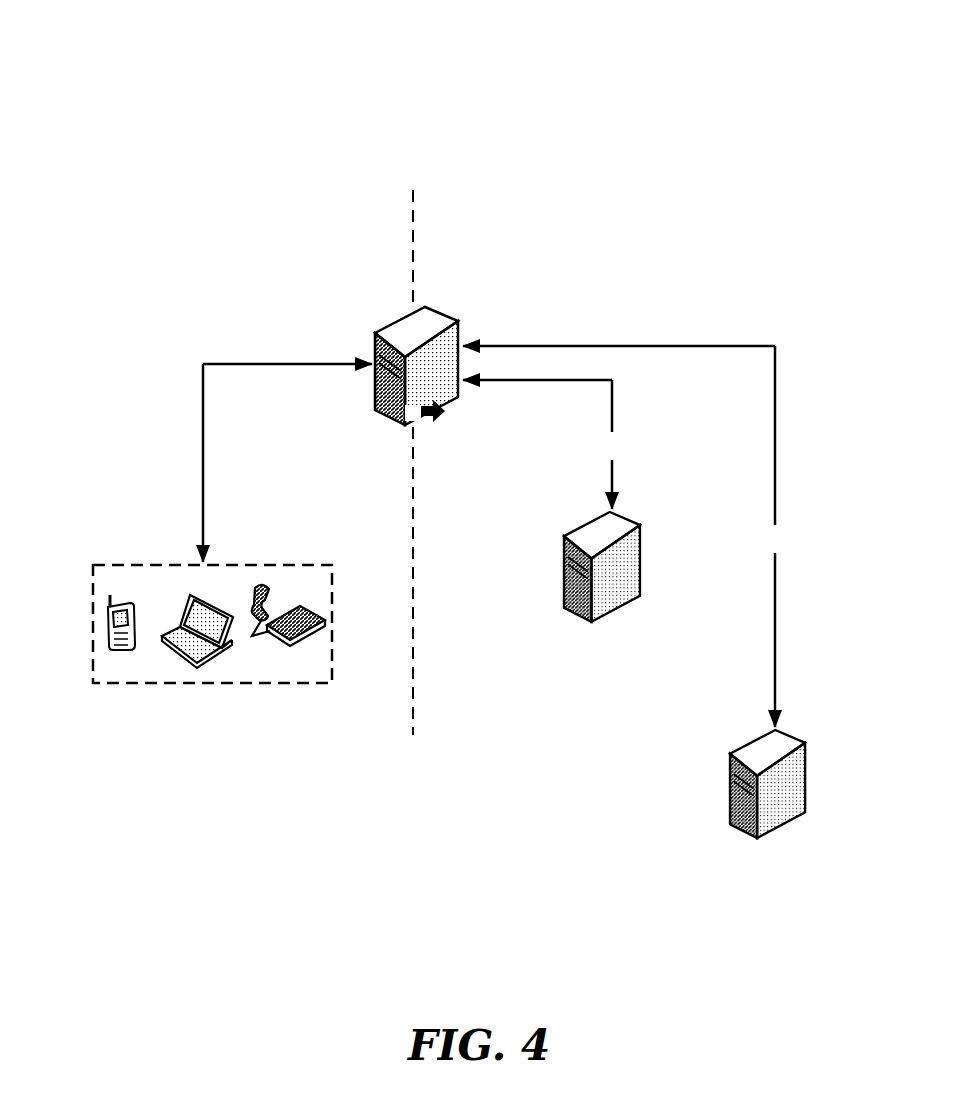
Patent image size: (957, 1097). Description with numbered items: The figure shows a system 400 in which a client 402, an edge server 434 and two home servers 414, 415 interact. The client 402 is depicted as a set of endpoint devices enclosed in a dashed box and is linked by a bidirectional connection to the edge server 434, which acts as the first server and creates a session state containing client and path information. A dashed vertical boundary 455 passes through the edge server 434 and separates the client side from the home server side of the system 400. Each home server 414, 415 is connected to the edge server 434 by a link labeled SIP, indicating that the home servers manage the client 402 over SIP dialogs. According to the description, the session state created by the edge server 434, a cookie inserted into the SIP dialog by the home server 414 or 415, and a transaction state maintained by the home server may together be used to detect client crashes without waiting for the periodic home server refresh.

The system 400 is at (690, 58).
The network boundary 455 is at (411, 183).
The edge server 434 is at (396, 311).
The home server 414 is at (592, 513).
The home server 415 is at (751, 737).
The client 402 is at (151, 558).